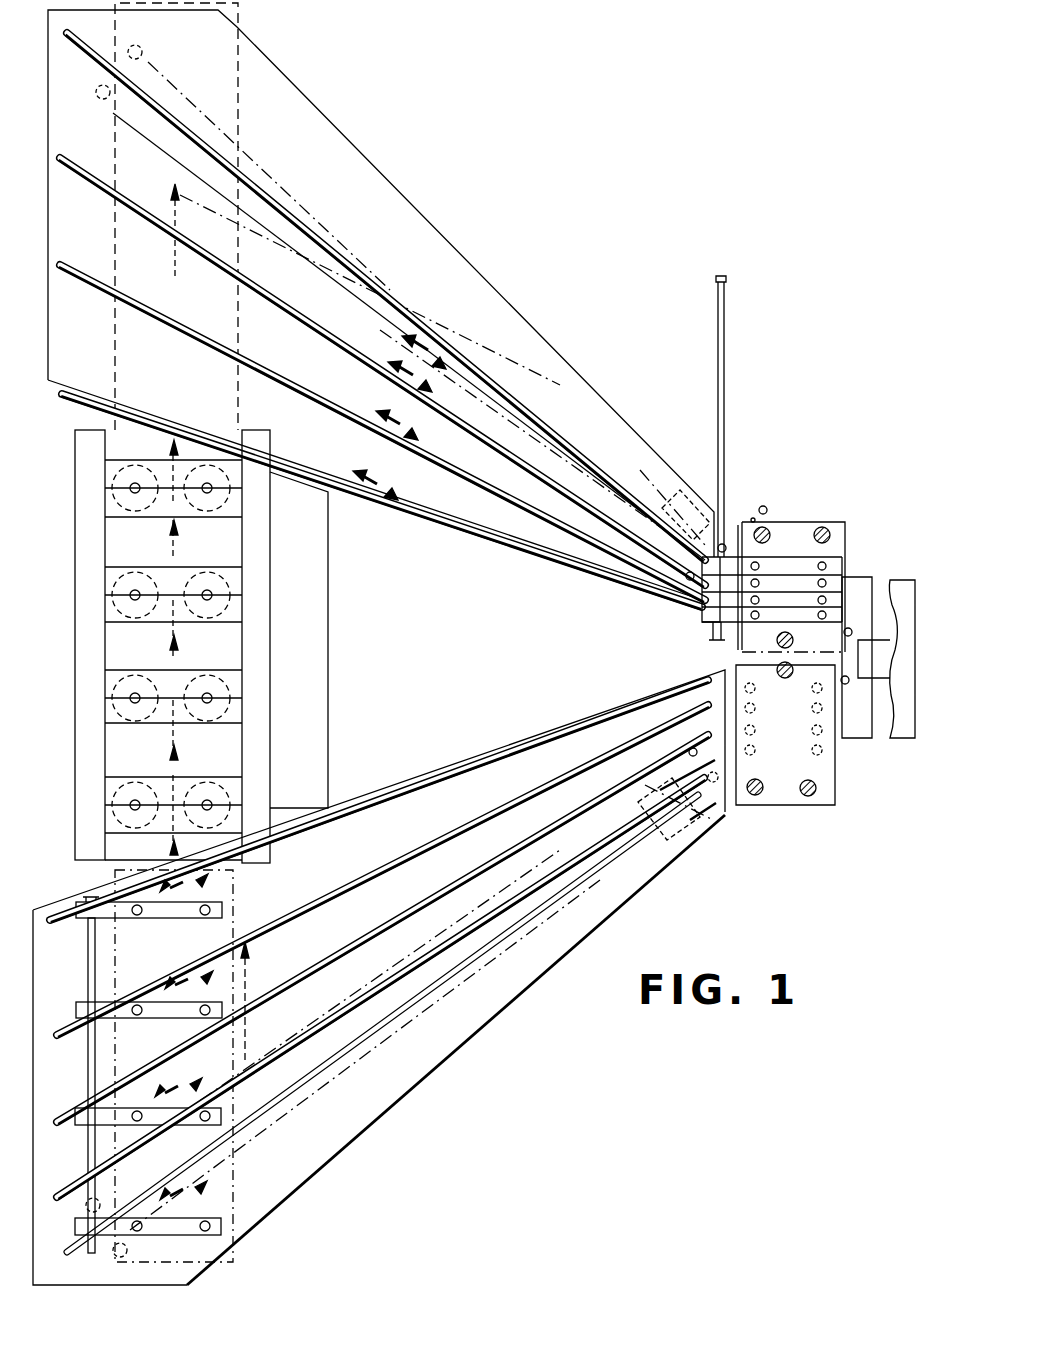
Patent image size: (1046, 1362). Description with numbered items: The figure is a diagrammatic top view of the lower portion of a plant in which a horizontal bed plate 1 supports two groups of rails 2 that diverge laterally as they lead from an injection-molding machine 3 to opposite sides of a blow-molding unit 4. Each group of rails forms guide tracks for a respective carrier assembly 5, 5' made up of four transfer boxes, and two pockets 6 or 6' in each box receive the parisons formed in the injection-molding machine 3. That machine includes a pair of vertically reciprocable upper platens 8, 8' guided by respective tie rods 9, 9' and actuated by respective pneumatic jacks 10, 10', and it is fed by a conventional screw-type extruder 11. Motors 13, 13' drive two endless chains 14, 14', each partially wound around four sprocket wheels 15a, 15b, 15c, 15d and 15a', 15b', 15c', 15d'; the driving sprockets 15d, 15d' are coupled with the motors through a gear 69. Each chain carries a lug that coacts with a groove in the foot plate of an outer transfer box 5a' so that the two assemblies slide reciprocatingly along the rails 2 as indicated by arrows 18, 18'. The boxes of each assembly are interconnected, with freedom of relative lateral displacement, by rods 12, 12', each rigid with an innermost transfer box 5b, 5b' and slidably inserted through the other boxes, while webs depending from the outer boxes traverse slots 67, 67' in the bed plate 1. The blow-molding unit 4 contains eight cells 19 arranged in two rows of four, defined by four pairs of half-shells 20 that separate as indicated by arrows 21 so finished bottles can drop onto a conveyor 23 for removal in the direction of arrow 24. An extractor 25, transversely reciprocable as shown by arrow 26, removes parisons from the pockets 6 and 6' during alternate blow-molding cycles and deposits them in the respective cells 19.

The bed plate 1 is at (420, 1065).
The rails 2 is at (555, 510).
The injection-molding machine 3 is at (825, 850).
The blow-molding unit 4 is at (295, 645).
The carrier assembly 5 is at (379, 977).
The carrier assembly 5' is at (680, 608).
The outer transfer box 5a' is at (763, 499).
The innermost transfer box 5b is at (71, 884).
The innermost transfer box 5b' is at (680, 625).
The pockets 6 is at (148, 1068).
The pockets 6' is at (772, 578).
The upper platen 8 is at (760, 730).
The upper platen 8' is at (828, 598).
The tie rod 9 is at (781, 764).
The tie rod 9' is at (797, 582).
The pneumatic jack 10 is at (803, 737).
The pneumatic jack 10' is at (829, 491).
The screw-type extruder 11 is at (868, 742).
The rod 12 is at (69, 1085).
The rod 12' is at (746, 416).
The motor 13 is at (687, 844).
The motor 13' is at (666, 468).
The endless chain 14 is at (357, 1040).
The endless chain 14' is at (424, 308).
The sprocket wheel 15a is at (139, 1280).
The sprocket wheel 15a' is at (173, 42).
The sprocket wheel 15b is at (72, 1186).
The sprocket wheel 15b' is at (84, 104).
The sprocket wheel 15c is at (379, 801).
The sprocket wheel 15c' is at (381, 501).
The driving sprocket 15d is at (410, 985).
The driving sprocket 15d' is at (747, 485).
The arrows 18 is at (169, 1037).
The arrows 18' is at (384, 417).
The blow-molding cells 19 is at (190, 500).
The half-shells 20 is at (262, 700).
The arrows 21 is at (170, 730).
The conveyor 23 is at (148, 342).
The arrow 24 is at (175, 250).
The extractor 25 is at (240, 925).
The arrow 26 is at (250, 990).
The slot 67 is at (382, 1023).
The slot 67' is at (385, 297).
The gear 69 is at (710, 810).